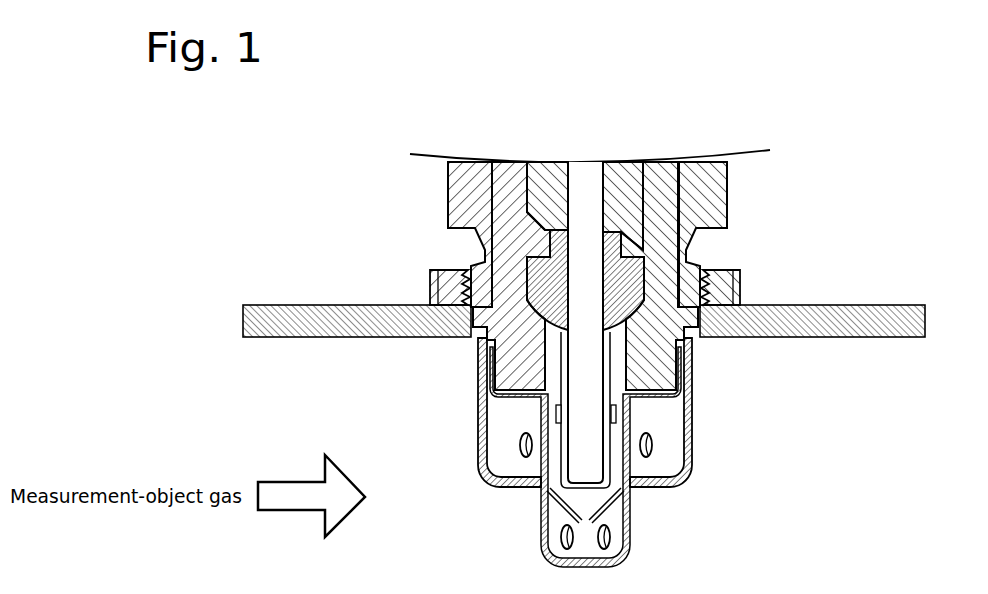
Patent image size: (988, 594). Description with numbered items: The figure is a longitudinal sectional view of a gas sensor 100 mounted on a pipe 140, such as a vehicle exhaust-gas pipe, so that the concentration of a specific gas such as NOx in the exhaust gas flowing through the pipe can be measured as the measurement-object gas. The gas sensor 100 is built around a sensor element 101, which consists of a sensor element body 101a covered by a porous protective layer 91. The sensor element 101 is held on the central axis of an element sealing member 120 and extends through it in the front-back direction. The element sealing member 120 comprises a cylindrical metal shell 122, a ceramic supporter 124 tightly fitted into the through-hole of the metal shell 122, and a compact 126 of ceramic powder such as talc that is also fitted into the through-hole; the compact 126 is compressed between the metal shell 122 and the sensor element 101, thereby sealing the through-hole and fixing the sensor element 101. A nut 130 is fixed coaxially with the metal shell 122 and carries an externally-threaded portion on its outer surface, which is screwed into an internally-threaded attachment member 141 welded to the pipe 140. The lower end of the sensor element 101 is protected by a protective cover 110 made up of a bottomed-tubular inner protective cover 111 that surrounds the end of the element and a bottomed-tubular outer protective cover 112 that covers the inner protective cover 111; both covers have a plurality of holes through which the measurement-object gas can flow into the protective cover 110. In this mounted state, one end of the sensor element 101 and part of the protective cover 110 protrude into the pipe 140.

The gas sensor 100 is at (616, 329).
The sensor element 101 is at (480, 325).
The sensor element body 101a is at (582, 362).
The porous protective layer 91 is at (563, 426).
The protective cover 110 is at (665, 452).
The inner protective cover 111 is at (680, 418).
The outer protective cover 112 is at (690, 440).
The element sealing member 120 is at (671, 276).
The metal shell 122 is at (660, 188).
The ceramic supporter 124 is at (625, 280).
The compact 126 is at (632, 228).
The nut 130 is at (455, 202).
The pipe 140 is at (328, 322).
The attachment member 141 is at (438, 273).